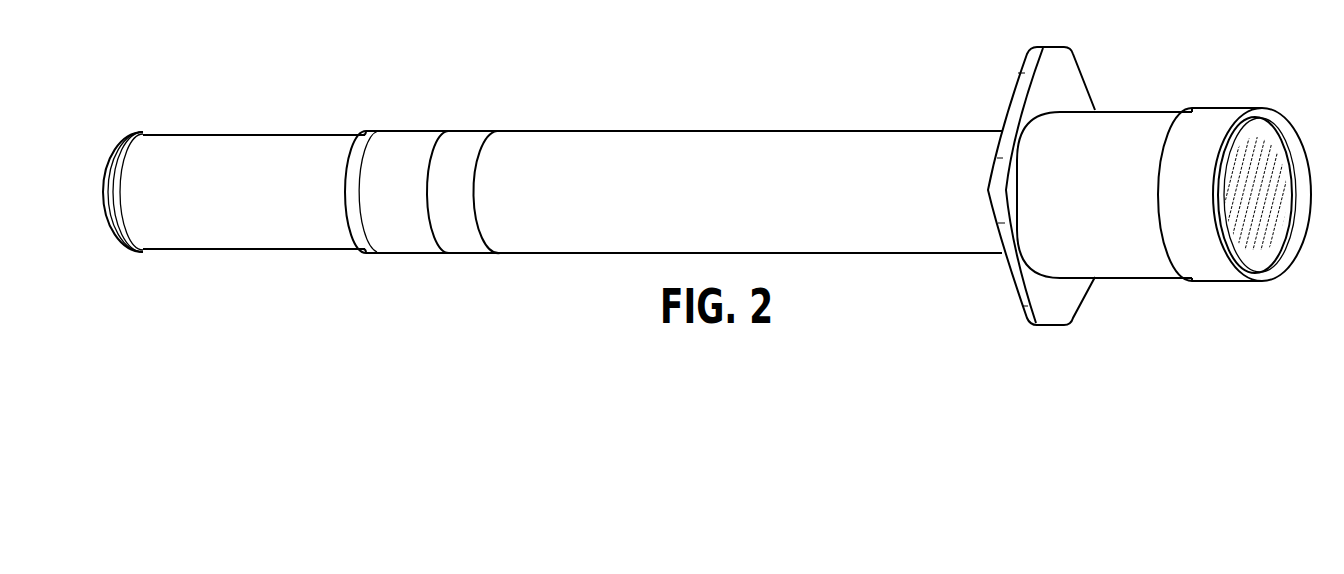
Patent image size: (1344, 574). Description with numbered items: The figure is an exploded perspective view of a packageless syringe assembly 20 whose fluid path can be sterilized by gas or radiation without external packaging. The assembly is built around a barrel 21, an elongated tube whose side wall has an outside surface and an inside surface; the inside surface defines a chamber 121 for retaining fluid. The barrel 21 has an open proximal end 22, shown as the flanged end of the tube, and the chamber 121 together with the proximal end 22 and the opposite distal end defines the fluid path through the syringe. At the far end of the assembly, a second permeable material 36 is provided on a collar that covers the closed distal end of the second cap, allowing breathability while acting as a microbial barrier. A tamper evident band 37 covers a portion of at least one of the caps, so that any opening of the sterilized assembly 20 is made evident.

The packageless syringe assembly 20 is at (885, 51).
The barrel 21 is at (577, 251).
The chamber 121 is at (678, 163).
The open proximal end 22 is at (1055, 308).
The second permeable material 36 is at (254, 136).
The tamper evident band 37 is at (487, 254).